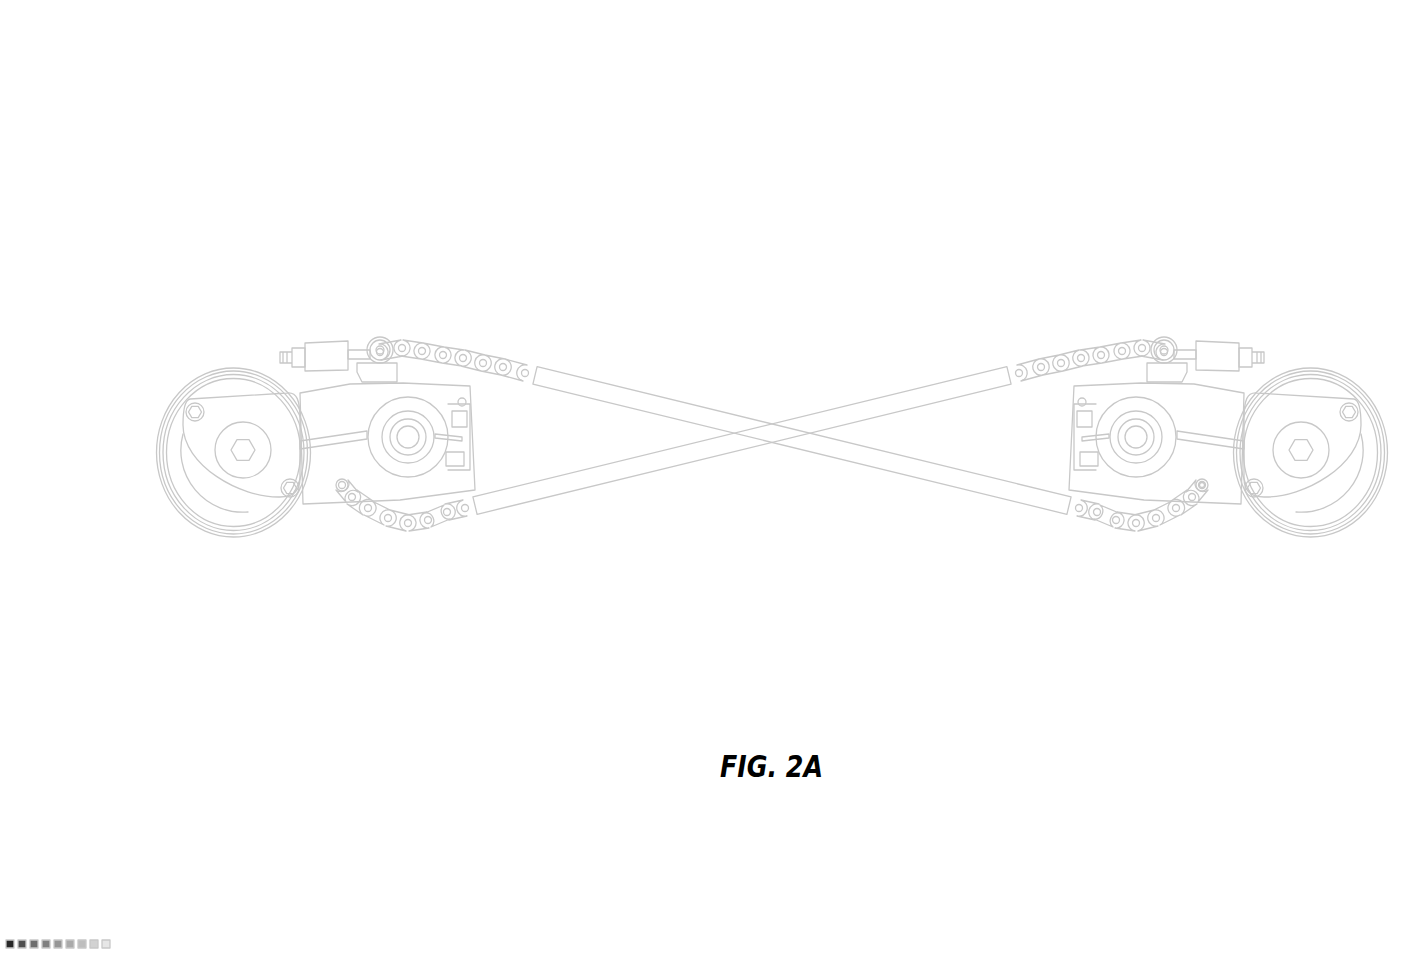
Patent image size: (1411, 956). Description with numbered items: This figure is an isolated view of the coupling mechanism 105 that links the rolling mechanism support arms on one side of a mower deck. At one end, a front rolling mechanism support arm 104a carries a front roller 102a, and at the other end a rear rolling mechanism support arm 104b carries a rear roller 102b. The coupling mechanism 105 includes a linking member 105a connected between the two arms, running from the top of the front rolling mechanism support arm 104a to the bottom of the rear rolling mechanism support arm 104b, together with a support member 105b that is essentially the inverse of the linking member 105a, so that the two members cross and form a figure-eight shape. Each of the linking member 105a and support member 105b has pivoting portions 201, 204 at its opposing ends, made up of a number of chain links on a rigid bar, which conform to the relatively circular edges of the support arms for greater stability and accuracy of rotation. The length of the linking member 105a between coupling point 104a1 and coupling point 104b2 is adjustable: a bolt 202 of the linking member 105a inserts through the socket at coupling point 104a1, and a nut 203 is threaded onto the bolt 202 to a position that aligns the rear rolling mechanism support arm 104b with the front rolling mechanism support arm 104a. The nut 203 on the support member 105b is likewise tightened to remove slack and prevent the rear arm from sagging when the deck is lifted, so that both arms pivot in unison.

The coupling mechanism 105 is at (718, 320).
The linking member 105a is at (634, 420).
The support member 105b is at (736, 458).
The front roller 102a is at (204, 366).
The rear roller 102b is at (1300, 358).
The front rolling mechanism support arm 104a is at (248, 390).
The coupling point (socket) 104a1 is at (332, 340).
The rear rolling mechanism support arm 104b is at (1232, 506).
The coupling point 104b2 is at (1210, 497).
The pivoting portion 201 is at (458, 342).
The bolt 202 is at (360, 342).
The nut 203 is at (292, 345).
The pivoting portion 204 is at (367, 524).